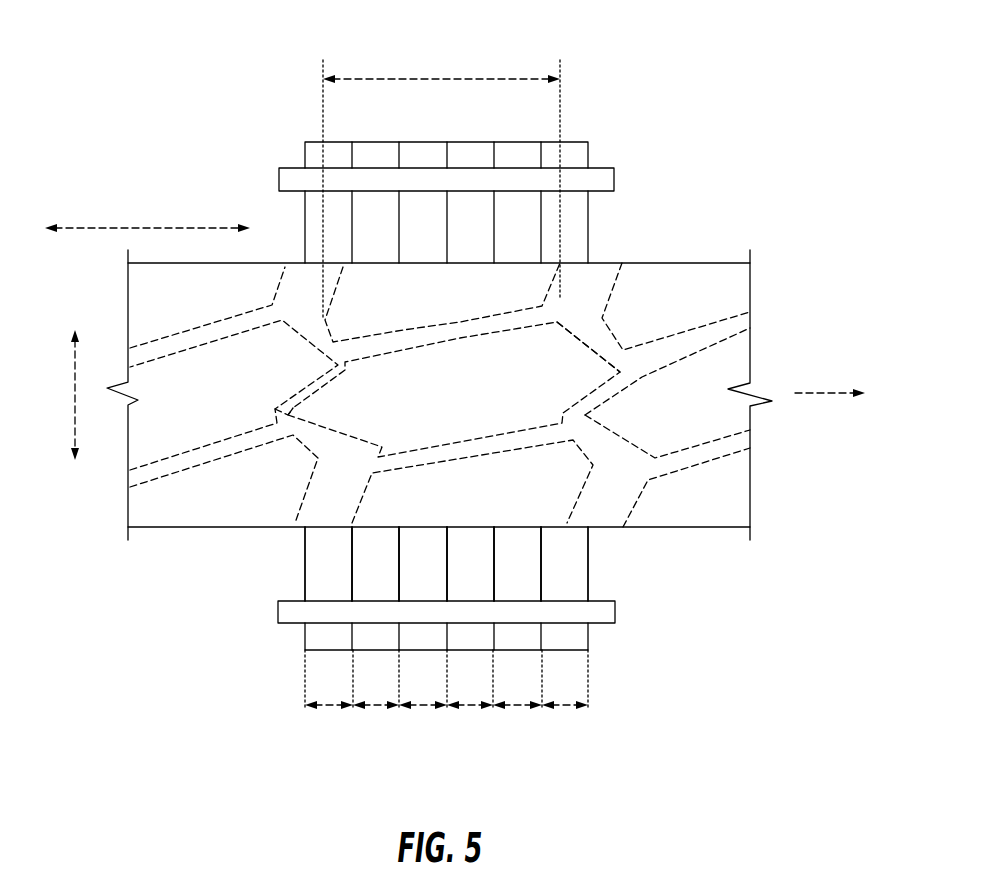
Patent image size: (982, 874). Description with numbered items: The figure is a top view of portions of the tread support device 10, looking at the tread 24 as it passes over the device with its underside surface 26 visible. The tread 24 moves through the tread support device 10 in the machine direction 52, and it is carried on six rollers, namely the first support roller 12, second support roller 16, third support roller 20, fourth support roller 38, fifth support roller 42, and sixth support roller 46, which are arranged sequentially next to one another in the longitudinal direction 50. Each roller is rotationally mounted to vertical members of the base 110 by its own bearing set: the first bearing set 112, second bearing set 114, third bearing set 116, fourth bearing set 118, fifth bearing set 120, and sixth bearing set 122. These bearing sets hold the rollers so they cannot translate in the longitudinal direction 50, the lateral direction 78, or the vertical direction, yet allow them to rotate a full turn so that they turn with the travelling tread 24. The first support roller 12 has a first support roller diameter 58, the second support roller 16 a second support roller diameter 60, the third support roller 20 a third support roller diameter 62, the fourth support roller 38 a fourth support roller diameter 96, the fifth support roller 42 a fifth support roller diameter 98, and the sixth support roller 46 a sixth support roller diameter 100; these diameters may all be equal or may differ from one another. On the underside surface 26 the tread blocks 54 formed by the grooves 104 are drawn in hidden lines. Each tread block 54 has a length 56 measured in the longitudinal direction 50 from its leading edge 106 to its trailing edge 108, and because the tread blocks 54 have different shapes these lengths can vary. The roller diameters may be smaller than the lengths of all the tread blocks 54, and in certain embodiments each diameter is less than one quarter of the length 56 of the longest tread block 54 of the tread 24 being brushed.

The tread support device 10 is at (165, 48).
The first support roller 12 is at (327, 572).
The second support roller 16 is at (364, 579).
The third support roller 20 is at (411, 579).
The tread 24 is at (733, 288).
The underside surface 26 is at (654, 282).
The fourth support roller 38 is at (459, 579).
The fifth support roller 42 is at (506, 579).
The sixth support roller 46 is at (553, 579).
The longitudinal direction 50 is at (147, 228).
The machine direction 52 is at (820, 393).
The tread blocks 54 is at (467, 401).
The length 56 is at (443, 78).
The first support roller diameter 58 is at (328, 710).
The second support roller diameter 60 is at (377, 710).
The third support roller diameter 62 is at (423, 710).
The lateral direction 78 is at (75, 397).
The fourth support roller diameter 96 is at (470, 710).
The fifth support roller diameter 98 is at (517, 710).
The sixth support roller diameter 100 is at (563, 710).
The grooves 104 is at (402, 332).
The leading edge 106 is at (587, 347).
The trailing edge 108 is at (298, 410).
The base 110 is at (617, 610).
The first bearing set 112 is at (340, 192).
The second bearing set 114 is at (378, 192).
The third bearing set 116 is at (423, 192).
The fourth bearing set 118 is at (467, 192).
The fifth bearing set 120 is at (517, 192).
The sixth bearing set 122 is at (578, 170).